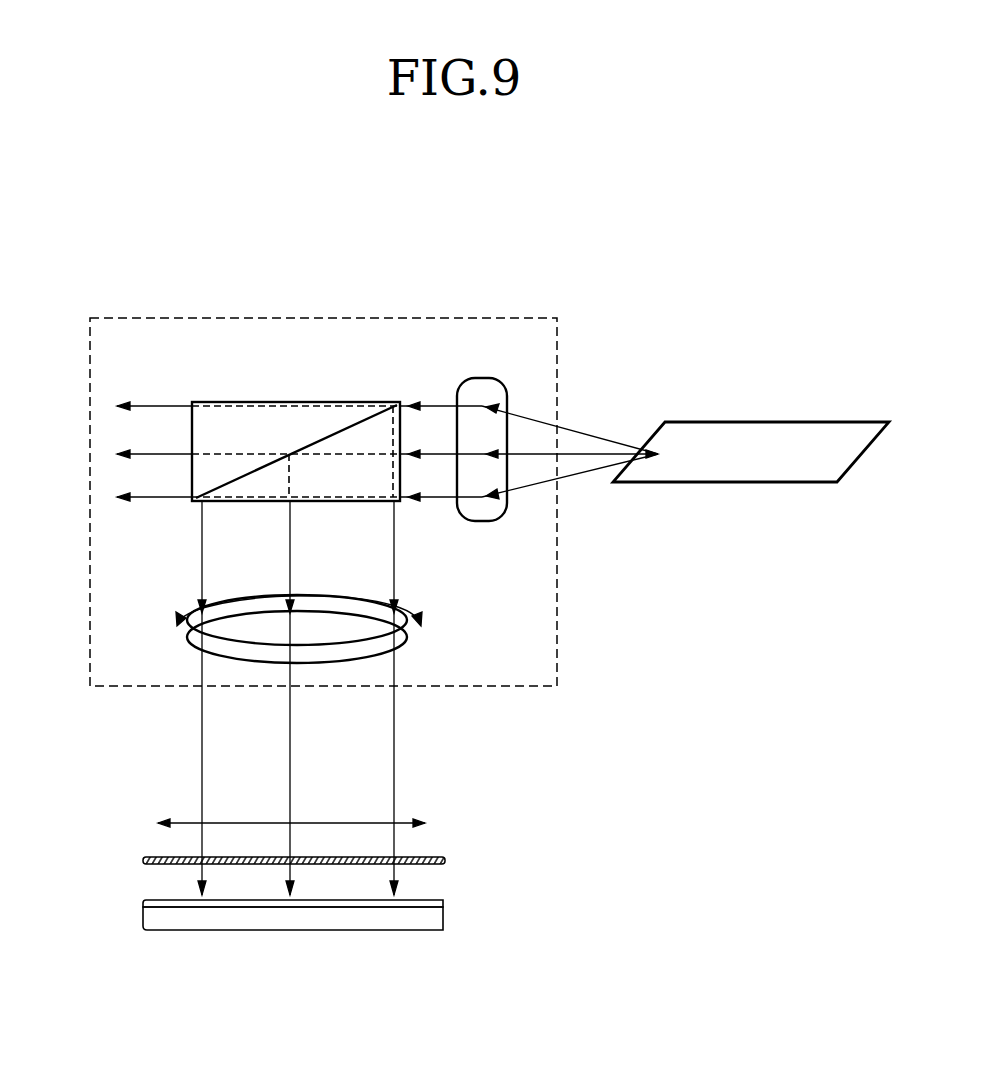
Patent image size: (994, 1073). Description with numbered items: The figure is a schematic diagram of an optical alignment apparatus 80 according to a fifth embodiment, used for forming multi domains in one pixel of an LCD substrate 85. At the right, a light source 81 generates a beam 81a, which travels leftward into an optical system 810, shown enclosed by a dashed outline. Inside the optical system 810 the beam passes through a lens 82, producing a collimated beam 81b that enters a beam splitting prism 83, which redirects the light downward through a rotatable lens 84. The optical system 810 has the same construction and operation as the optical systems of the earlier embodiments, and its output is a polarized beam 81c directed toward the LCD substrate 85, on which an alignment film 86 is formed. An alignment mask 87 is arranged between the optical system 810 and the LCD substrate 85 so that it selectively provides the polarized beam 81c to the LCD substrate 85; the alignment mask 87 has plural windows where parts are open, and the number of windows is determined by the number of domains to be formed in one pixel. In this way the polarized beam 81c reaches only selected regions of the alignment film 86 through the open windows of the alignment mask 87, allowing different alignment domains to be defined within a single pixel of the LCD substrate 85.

The optical alignment apparatus 80 is at (388, 262).
The optical system 810 is at (232, 318).
The beam splitter prism 83 is at (304, 402).
The collimating lens 82 is at (490, 378).
The light source 81 is at (742, 482).
The beam 81a is at (563, 427).
The collimated light beam 81b is at (430, 406).
The polarized beam 81c is at (395, 758).
The rotating lens 84 is at (408, 637).
The alignment mask 87 is at (445, 860).
The alignment film 86 is at (443, 900).
The LCD substrate 85 is at (443, 925).